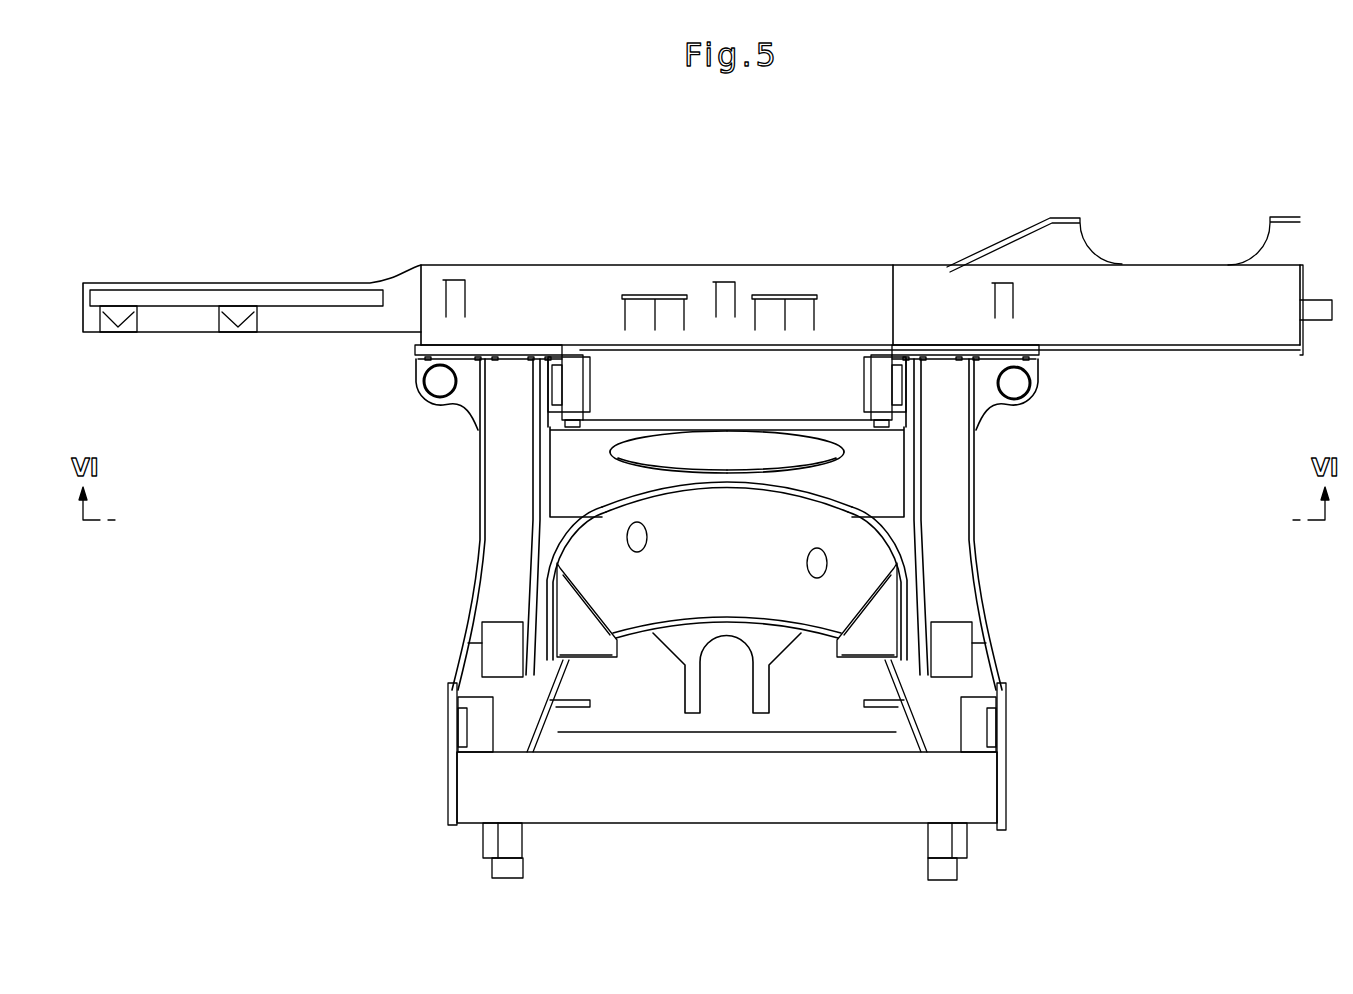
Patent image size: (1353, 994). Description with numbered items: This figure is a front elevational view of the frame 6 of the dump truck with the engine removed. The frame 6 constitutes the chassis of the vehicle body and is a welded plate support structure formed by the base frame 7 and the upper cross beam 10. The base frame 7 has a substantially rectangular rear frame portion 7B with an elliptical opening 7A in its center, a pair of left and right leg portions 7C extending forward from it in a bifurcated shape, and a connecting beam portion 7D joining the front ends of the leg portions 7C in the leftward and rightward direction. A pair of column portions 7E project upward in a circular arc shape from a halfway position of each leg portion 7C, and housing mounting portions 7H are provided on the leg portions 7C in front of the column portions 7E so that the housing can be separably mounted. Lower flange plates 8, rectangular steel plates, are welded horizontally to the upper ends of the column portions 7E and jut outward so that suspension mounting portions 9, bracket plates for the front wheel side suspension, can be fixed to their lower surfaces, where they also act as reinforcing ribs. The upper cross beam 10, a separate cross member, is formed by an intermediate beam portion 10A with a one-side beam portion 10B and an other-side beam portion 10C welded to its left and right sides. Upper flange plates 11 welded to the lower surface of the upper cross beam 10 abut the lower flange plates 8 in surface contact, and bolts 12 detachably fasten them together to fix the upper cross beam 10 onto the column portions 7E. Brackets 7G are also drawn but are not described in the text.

The frame 6 is at (873, 256).
The base frame 7 is at (474, 550).
The elliptical opening 7A is at (672, 447).
The rear frame portion 7B is at (837, 440).
The leg portions 7C is at (538, 662).
The connecting beam portion 7D is at (735, 795).
The column portions 7E is at (515, 455).
The bracket 7G is at (590, 375).
The housing mounting portions 7H is at (455, 742).
The lower flange plates 8 is at (515, 362).
The suspension mounting portions 9 is at (420, 400).
The upper cross beam 10 is at (454, 263).
The intermediate beam portion 10A is at (718, 273).
The one-side beam portion 10B is at (1172, 273).
The other-side beam portion 10C is at (163, 287).
The upper flange plates 11 is at (499, 357).
The bolts 12 is at (415, 362).